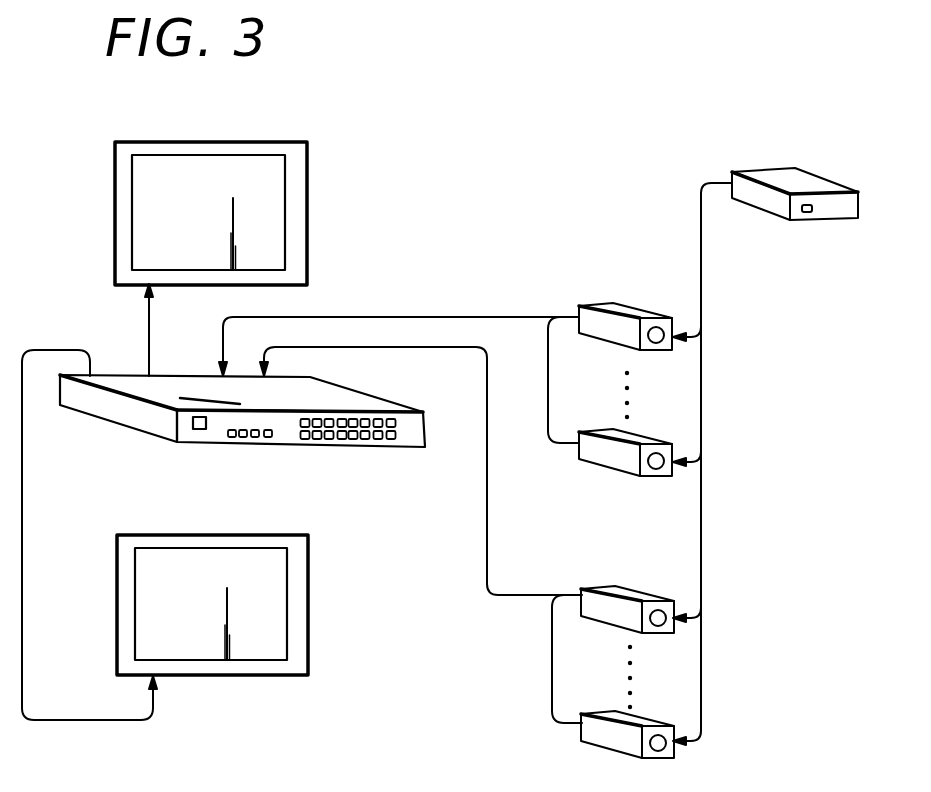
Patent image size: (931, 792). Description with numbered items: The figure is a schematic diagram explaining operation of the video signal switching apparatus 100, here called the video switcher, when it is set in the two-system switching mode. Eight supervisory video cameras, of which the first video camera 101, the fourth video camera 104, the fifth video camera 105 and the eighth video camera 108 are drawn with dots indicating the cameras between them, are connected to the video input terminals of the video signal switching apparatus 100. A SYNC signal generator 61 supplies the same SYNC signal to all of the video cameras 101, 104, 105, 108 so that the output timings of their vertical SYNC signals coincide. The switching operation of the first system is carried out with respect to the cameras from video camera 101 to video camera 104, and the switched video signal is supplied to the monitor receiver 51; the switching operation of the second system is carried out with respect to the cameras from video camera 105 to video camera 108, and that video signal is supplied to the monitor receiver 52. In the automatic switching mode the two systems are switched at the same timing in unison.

The monitor receiver 51 is at (307, 203).
The monitor receiver 52 is at (308, 597).
The video signal switching apparatus 100 is at (362, 447).
The supervisory video camera 101 is at (645, 306).
The supervisory video camera 104 is at (650, 443).
The supervisory video camera 105 is at (652, 598).
The supervisory video camera 108 is at (653, 724).
The SYNC signal generator 61 is at (822, 222).